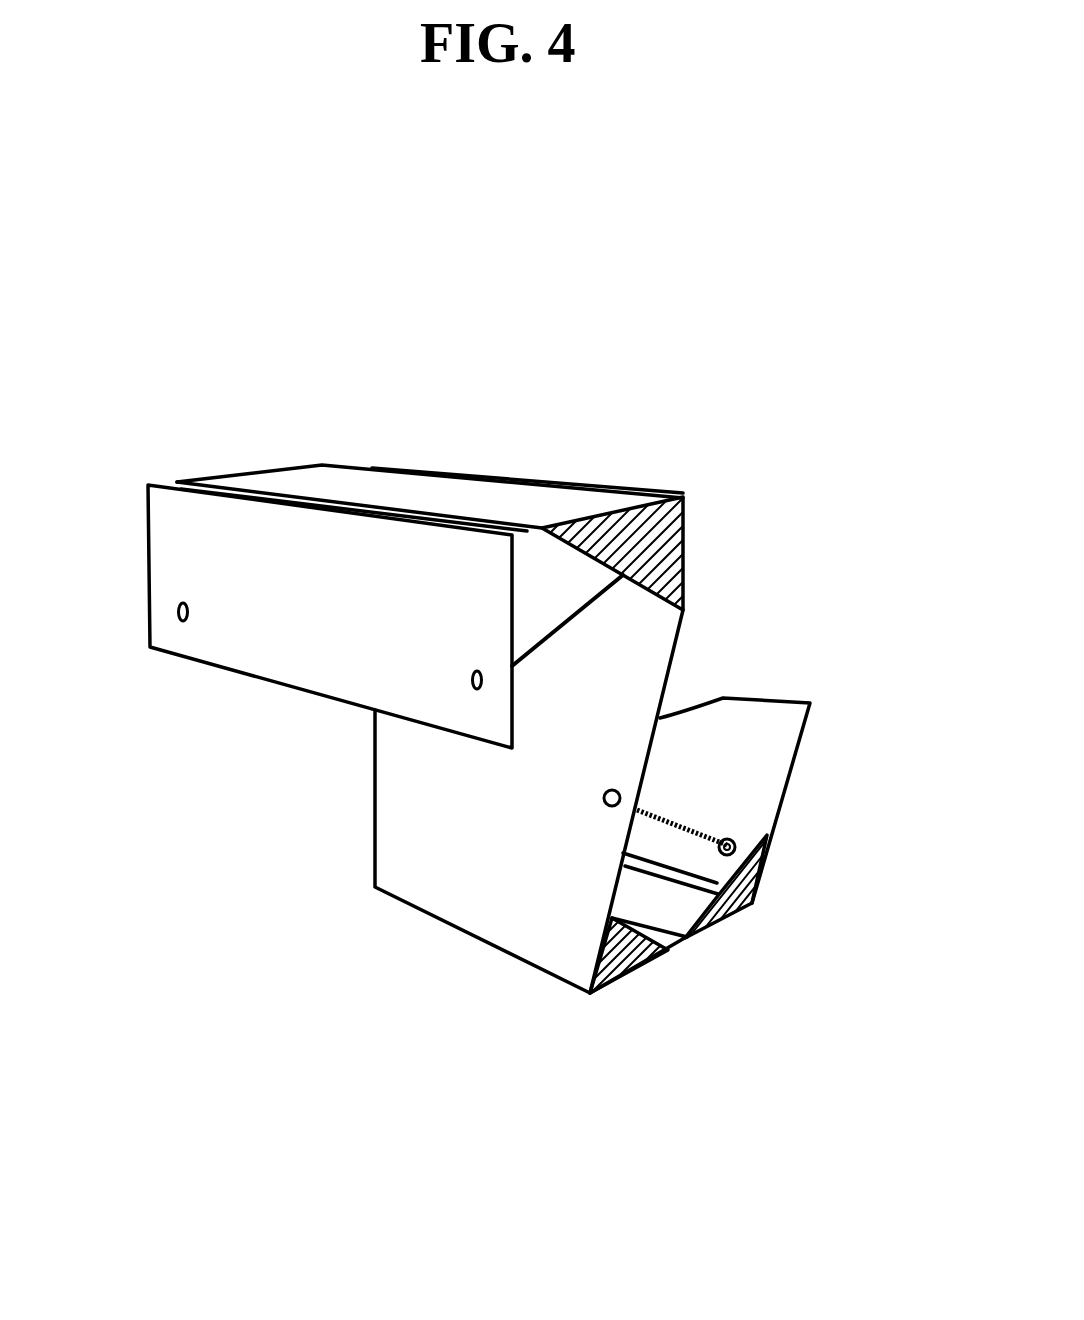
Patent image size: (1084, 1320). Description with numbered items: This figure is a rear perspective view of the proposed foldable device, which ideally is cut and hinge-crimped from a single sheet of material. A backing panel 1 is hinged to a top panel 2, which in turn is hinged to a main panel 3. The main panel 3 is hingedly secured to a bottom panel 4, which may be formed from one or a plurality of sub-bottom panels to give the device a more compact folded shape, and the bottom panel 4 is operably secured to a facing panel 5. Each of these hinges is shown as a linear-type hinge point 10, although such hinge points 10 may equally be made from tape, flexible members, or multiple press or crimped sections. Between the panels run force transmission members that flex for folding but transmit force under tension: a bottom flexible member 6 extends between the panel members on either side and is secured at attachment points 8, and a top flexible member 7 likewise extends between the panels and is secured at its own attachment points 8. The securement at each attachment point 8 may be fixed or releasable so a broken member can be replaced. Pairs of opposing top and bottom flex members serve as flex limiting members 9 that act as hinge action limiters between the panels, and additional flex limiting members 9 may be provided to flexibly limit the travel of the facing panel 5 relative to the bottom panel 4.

The backing panel 1 is at (320, 638).
The top panel 2 is at (472, 484).
The main panel 3 is at (434, 830).
The bottom panel 4 is at (685, 930).
The facing panel 5 is at (740, 716).
The bottom flexible member 6 is at (709, 863).
The top flexible member 7 is at (564, 668).
The attachment point 8 is at (164, 615).
The flex limiting member 9 is at (625, 912).
The hinge point 10 is at (303, 443).